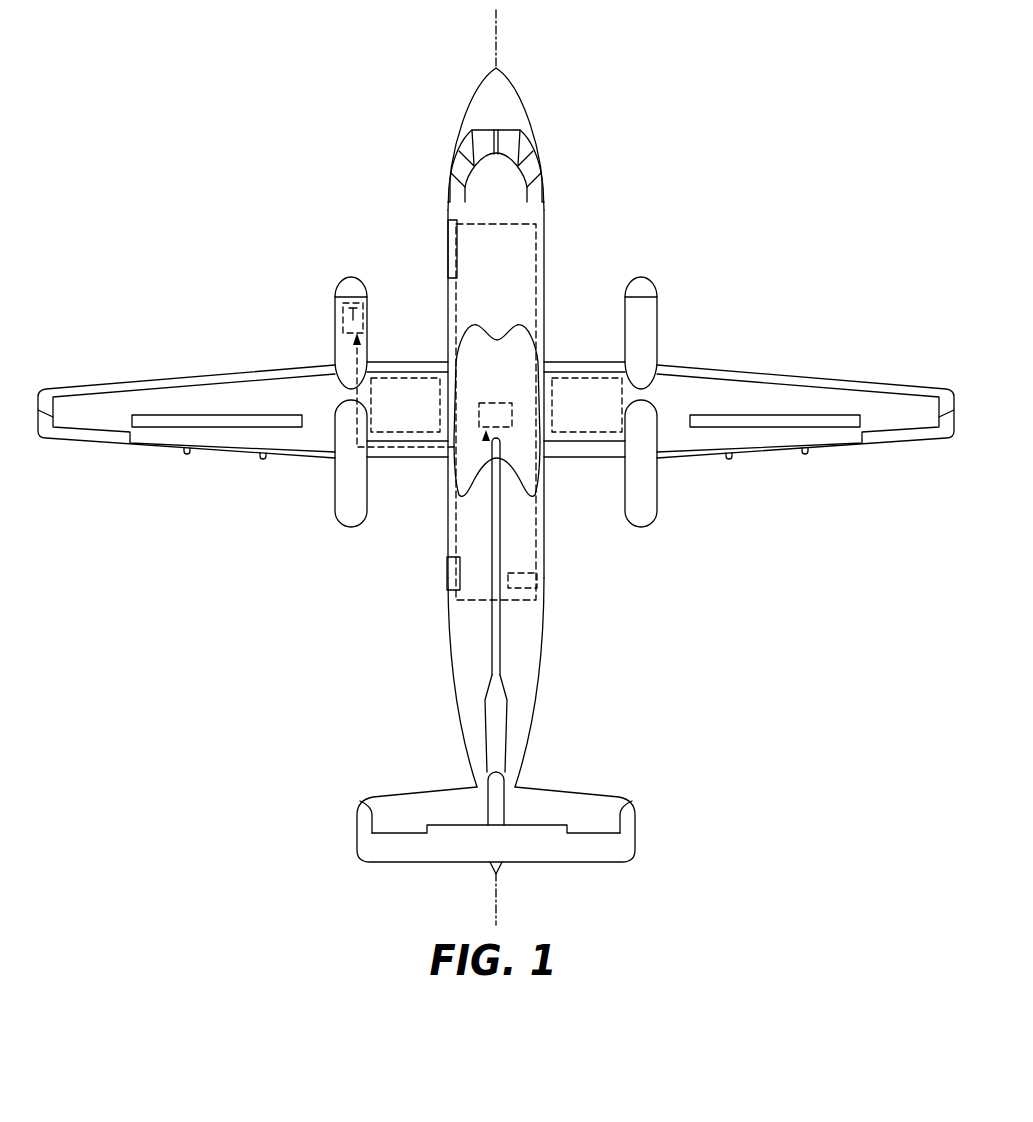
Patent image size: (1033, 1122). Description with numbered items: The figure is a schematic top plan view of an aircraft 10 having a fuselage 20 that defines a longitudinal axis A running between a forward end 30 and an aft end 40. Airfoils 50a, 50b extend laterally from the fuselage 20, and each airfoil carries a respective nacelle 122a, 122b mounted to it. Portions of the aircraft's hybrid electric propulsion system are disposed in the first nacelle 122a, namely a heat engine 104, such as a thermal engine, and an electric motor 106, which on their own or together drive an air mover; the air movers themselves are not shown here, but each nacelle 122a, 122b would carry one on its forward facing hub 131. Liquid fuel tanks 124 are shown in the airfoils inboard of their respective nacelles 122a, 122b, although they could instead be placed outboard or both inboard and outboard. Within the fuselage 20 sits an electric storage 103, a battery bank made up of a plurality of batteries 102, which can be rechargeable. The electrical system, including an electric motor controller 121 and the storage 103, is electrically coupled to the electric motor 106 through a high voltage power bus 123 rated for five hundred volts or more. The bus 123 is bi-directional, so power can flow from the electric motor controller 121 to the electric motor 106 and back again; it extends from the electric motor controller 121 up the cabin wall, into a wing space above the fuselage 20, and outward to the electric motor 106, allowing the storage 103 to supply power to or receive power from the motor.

The longitudinal axis A is at (497, 20).
The aircraft 10 is at (688, 166).
The fuselage 20 is at (545, 243).
The forward end 30 is at (497, 70).
The aft end 40 is at (502, 872).
The airfoil 50a is at (216, 372).
The airfoil 50b is at (838, 380).
The battery 102 is at (545, 586).
The electric storage 103 is at (547, 533).
The heat engine 104 is at (338, 314).
The electric motor 106 is at (375, 303).
The electric motor controller 121 is at (498, 402).
The first nacelle 122a is at (334, 472).
The second nacelle 122b is at (660, 305).
The high voltage power bus 123 is at (414, 457).
The liquid fuel tank 124 is at (430, 378).
The forward facing hub 131 is at (352, 276).